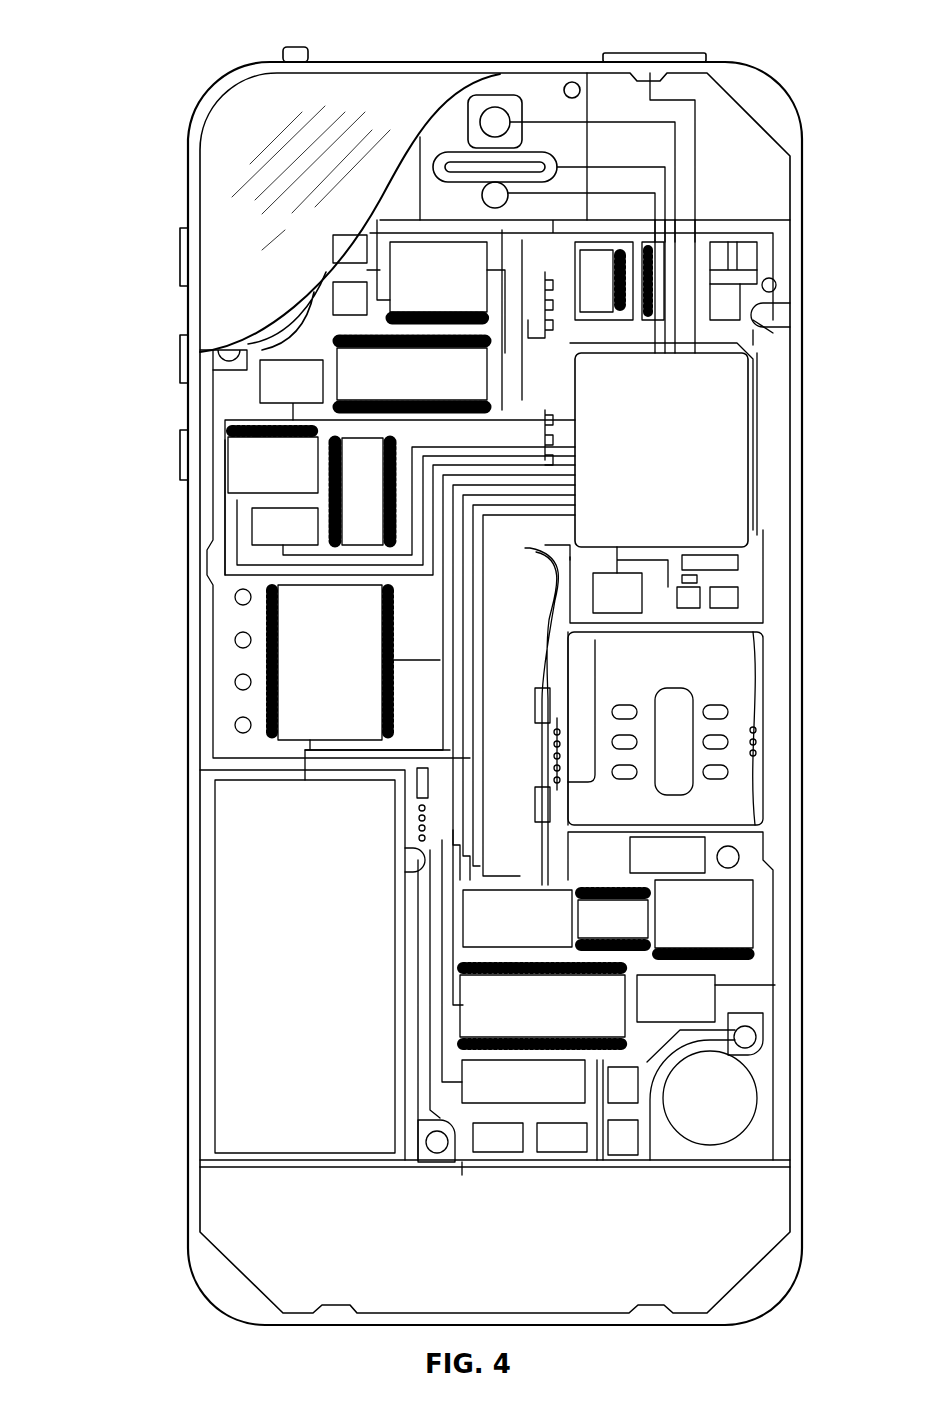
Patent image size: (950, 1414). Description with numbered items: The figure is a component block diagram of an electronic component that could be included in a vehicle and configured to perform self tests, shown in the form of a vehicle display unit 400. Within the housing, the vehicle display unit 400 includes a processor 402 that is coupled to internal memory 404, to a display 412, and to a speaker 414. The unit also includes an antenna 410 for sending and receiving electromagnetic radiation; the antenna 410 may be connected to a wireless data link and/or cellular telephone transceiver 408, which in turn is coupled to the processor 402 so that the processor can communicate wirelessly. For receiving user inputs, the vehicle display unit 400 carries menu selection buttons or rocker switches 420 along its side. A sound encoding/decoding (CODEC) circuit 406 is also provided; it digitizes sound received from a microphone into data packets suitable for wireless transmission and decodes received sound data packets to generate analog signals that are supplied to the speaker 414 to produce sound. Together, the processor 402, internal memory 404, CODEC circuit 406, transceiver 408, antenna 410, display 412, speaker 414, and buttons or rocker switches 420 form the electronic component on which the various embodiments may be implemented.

The vehicle display unit 400 is at (170, 85).
The processor 402 is at (663, 445).
The internal memory 404 is at (438, 280).
The sound encoding/decoding (CODEC) circuit 406 is at (412, 374).
The wireless data link and/or cellular telephone transceiver 408 is at (702, 262).
The antenna 410 is at (600, 55).
The display 412 is at (218, 180).
The speaker 414 is at (451, 155).
The menu selection buttons or rocker switches 420 is at (180, 250).